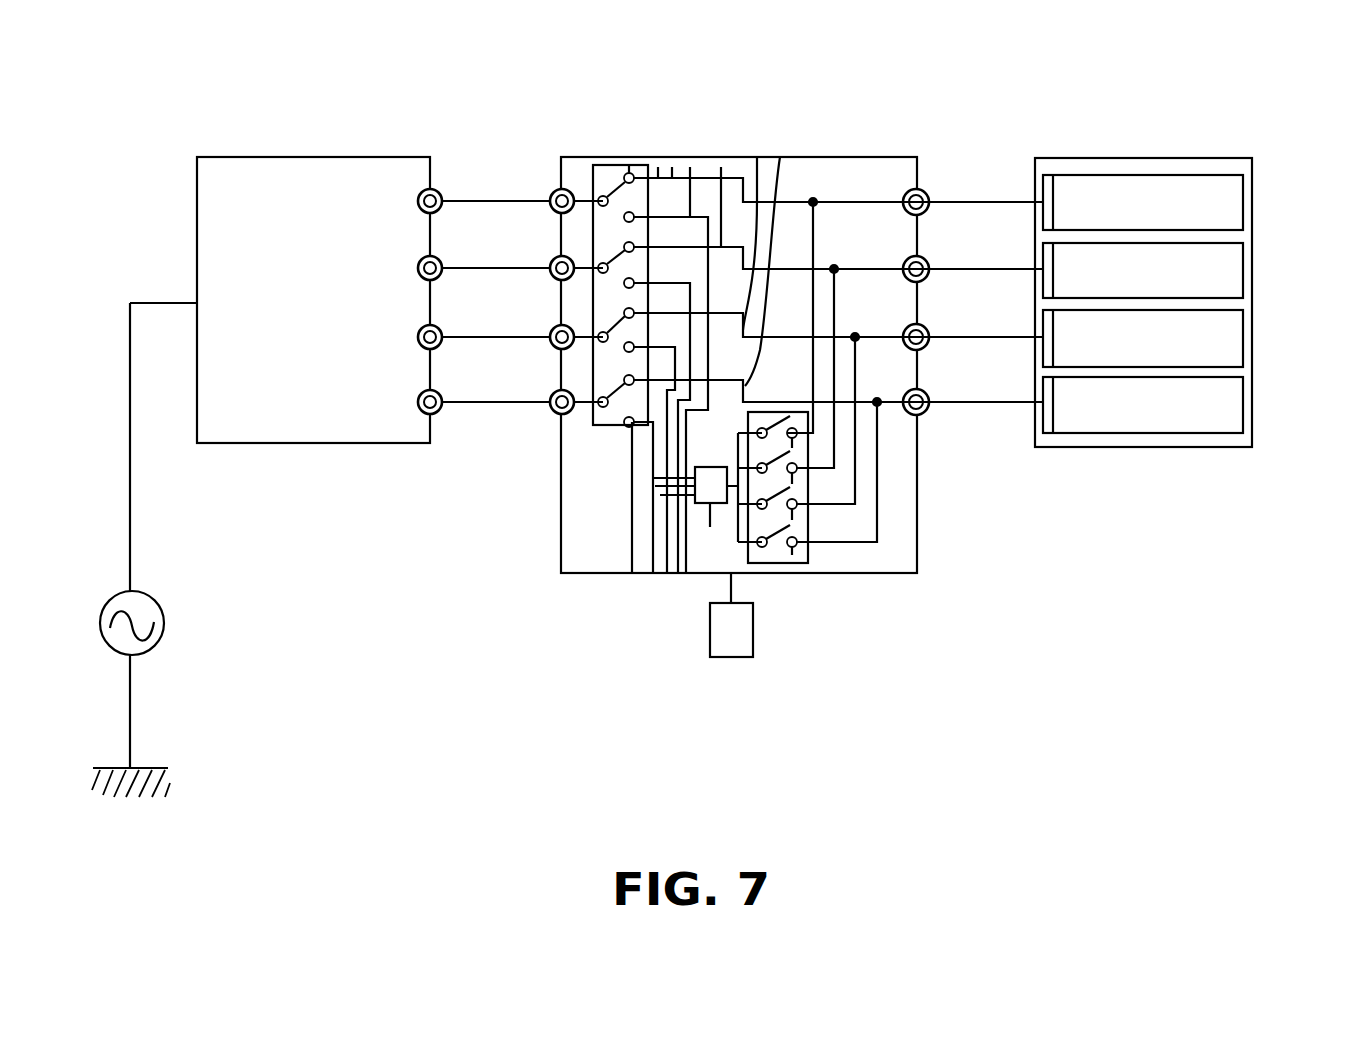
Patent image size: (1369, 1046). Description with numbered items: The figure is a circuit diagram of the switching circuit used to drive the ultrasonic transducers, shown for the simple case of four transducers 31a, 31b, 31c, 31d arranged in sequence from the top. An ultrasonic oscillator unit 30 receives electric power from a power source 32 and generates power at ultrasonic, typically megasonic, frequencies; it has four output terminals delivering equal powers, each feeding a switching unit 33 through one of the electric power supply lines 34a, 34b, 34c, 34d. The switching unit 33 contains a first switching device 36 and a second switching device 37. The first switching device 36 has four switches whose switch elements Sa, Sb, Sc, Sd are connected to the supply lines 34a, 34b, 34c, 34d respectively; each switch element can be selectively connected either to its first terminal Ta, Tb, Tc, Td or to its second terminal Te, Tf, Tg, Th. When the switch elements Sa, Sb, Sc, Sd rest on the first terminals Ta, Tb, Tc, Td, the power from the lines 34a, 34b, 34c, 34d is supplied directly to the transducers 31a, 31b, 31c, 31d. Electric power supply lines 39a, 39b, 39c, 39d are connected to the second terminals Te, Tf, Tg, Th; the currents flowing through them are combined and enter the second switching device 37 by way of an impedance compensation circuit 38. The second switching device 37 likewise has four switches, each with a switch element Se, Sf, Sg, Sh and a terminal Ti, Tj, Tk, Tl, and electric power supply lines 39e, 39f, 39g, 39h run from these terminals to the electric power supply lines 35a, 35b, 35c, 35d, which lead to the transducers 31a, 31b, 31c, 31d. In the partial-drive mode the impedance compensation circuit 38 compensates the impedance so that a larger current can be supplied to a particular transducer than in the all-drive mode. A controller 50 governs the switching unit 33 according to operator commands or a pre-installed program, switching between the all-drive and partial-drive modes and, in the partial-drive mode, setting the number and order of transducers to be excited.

The ultrasonic oscillator unit 30 is at (327, 157).
The power source 32 is at (150, 612).
The switching unit 33 is at (598, 574).
The electric power supply line 34a is at (465, 200).
The electric power supply line 34b is at (490, 267).
The electric power supply line 34c is at (487, 337).
The electric power supply line 34d is at (500, 403).
The electric power supply line 35a is at (960, 200).
The electric power supply line 35b is at (1010, 269).
The electric power supply line 35c is at (988, 339).
The electric power supply line 35d is at (1010, 404).
The first switching device 36 is at (597, 163).
The second switching device 37 is at (771, 573).
The impedance compensation circuit 38 is at (695, 518).
The electric power supply line 39a is at (688, 578).
The electric power supply line 39b is at (680, 578).
The electric power supply line 39c is at (667, 578).
The electric power supply line 39d is at (653, 578).
The electric power supply line 39e is at (818, 214).
The electric power supply line 39f is at (837, 300).
The electric power supply line 39g is at (857, 362).
The electric power supply line 39h is at (879, 407).
The controller 50 is at (745, 645).
The ultrasonic transducer 31a is at (1237, 207).
The ultrasonic transducer 31b is at (1237, 272).
The ultrasonic transducer 31c is at (1237, 340).
The ultrasonic transducer 31d is at (1237, 407).
The switch element Sa is at (601, 195).
The switch element Sb is at (602, 262).
The switch element Sc is at (604, 343).
The switch element Sd is at (603, 398).
The switch element Se is at (797, 431).
The switch element Sf is at (797, 470).
The switch element Sg is at (795, 527).
The switch element Sh is at (806, 563).
The first terminal Ta is at (629, 165).
The first terminal Tb is at (672, 167).
The first terminal Tc is at (721, 167).
The first terminal Td is at (780, 157).
The second terminal Te is at (658, 167).
The second terminal Tf is at (690, 167).
The second terminal Tg is at (757, 157).
The second terminal Th is at (632, 576).
The terminal Ti is at (794, 453).
The terminal Tj is at (797, 507).
The terminal Tk is at (805, 515).
The terminal Tl is at (797, 545).